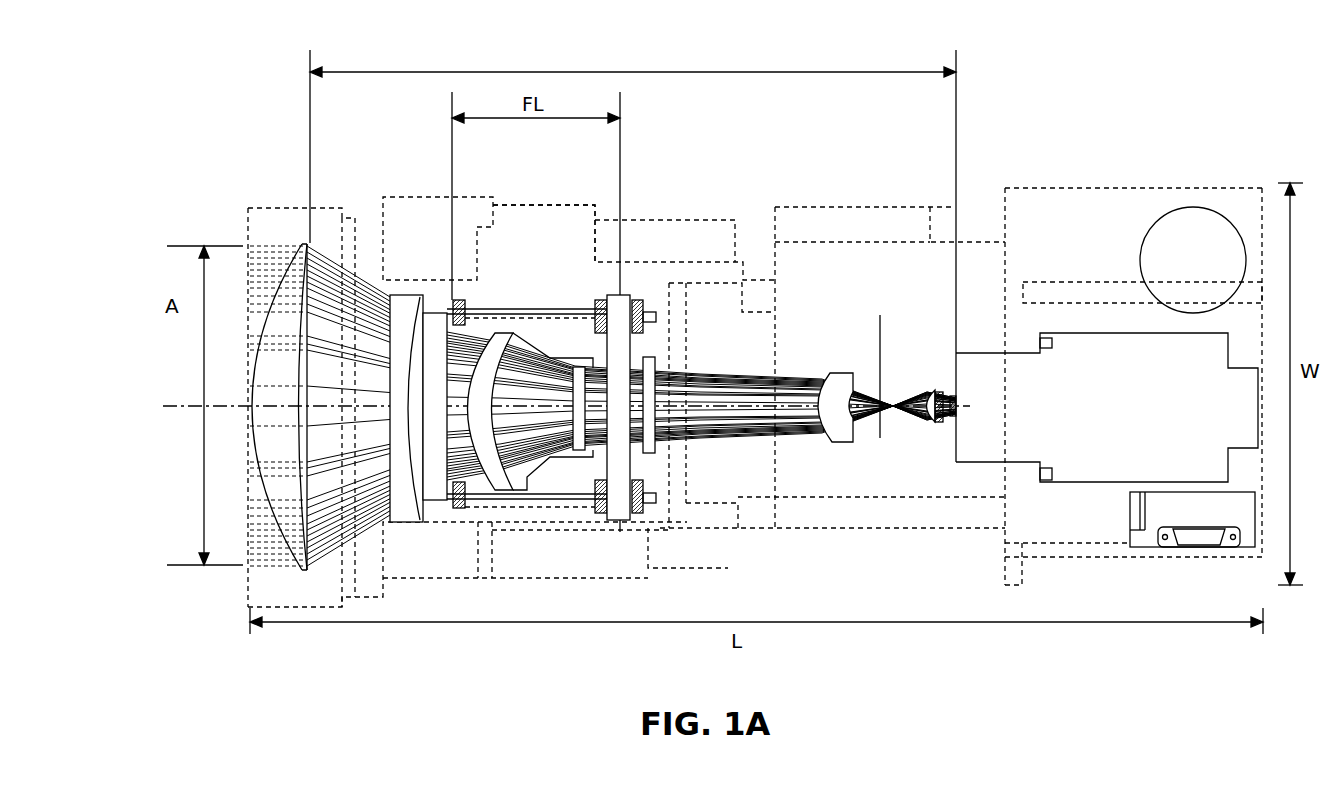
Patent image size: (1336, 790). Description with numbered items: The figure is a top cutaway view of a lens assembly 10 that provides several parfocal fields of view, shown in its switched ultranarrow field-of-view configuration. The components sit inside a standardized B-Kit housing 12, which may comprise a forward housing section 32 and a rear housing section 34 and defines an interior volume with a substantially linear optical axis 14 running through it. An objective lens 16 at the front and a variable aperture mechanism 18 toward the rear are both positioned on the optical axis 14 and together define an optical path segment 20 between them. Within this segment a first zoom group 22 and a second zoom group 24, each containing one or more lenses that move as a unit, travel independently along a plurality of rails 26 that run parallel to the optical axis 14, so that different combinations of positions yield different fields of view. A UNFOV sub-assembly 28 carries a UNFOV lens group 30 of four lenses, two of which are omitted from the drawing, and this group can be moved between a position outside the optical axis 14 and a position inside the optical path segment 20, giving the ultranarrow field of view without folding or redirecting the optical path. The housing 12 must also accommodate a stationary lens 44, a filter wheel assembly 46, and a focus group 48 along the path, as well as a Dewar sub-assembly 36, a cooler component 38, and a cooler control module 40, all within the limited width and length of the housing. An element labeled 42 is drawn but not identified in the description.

The lens assembly 10 is at (267, 130).
The B-Kit housing 12 is at (828, 220).
The optical axis 14 is at (176, 407).
The objective lens 16 is at (298, 277).
The variable aperture mechanism 18 is at (956, 427).
The optical path segment 20 is at (633, 253).
The first zoom group 22 is at (412, 523).
The second zoom group 24 is at (620, 512).
The rails 26 is at (537, 500).
The UNFOV sub-assembly 28 is at (513, 333).
The UNFOV lens group 30 is at (583, 363).
The forward housing section 32 is at (533, 222).
The rear housing section 34 is at (878, 206).
The Dewar sub-assembly 36 is at (1080, 355).
The cooler component 38 is at (1195, 220).
The cooler control module 40 is at (1192, 535).
The field plate 42 is at (650, 456).
The stationary lens 44 is at (838, 440).
The filter wheel assembly 46 is at (880, 345).
The focus group 48 is at (927, 388).